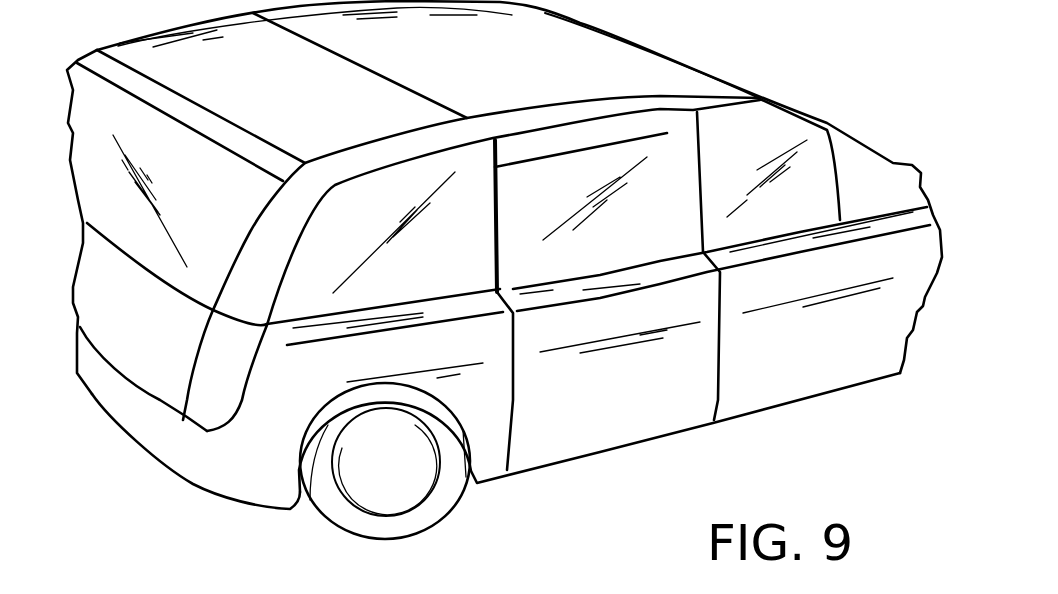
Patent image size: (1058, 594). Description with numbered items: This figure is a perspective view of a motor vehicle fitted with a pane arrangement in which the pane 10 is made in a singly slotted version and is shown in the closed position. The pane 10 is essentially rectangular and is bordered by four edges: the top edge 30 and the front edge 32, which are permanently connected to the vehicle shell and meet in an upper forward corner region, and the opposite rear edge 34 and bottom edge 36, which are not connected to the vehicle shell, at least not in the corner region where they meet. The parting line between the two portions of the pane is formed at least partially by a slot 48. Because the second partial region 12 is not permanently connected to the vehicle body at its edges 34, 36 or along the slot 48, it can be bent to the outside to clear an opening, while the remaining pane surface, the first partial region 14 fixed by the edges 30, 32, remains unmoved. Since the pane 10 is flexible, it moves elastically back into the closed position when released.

The pane 10 is at (643, 213).
The second partial region 12 is at (549, 230).
The first partial region 14 is at (575, 134).
The top edge 30 is at (516, 133).
The front edge 32 is at (703, 182).
The rear edge 34 is at (495, 233).
The bottom edge 36 is at (613, 267).
The slot 48 is at (615, 144).